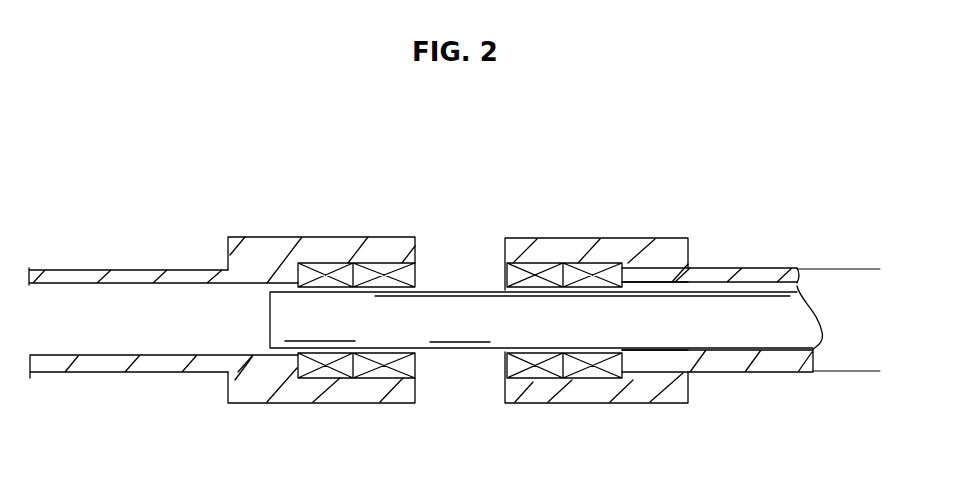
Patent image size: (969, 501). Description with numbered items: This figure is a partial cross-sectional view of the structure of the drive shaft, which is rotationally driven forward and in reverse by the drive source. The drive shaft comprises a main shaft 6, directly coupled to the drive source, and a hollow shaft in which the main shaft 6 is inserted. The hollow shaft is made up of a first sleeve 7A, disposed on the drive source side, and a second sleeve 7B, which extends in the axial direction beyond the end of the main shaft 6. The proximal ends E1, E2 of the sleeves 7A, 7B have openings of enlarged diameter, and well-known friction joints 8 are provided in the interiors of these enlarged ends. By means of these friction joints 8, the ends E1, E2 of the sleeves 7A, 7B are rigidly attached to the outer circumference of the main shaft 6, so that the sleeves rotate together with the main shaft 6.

The main shaft 6 is at (460, 350).
The first sleeve 7A is at (785, 268).
The second sleeve 7B is at (117, 270).
The friction joint 8 is at (323, 378).
The proximal end of first sleeve E1 is at (573, 238).
The proximal end of second sleeve E2 is at (342, 238).